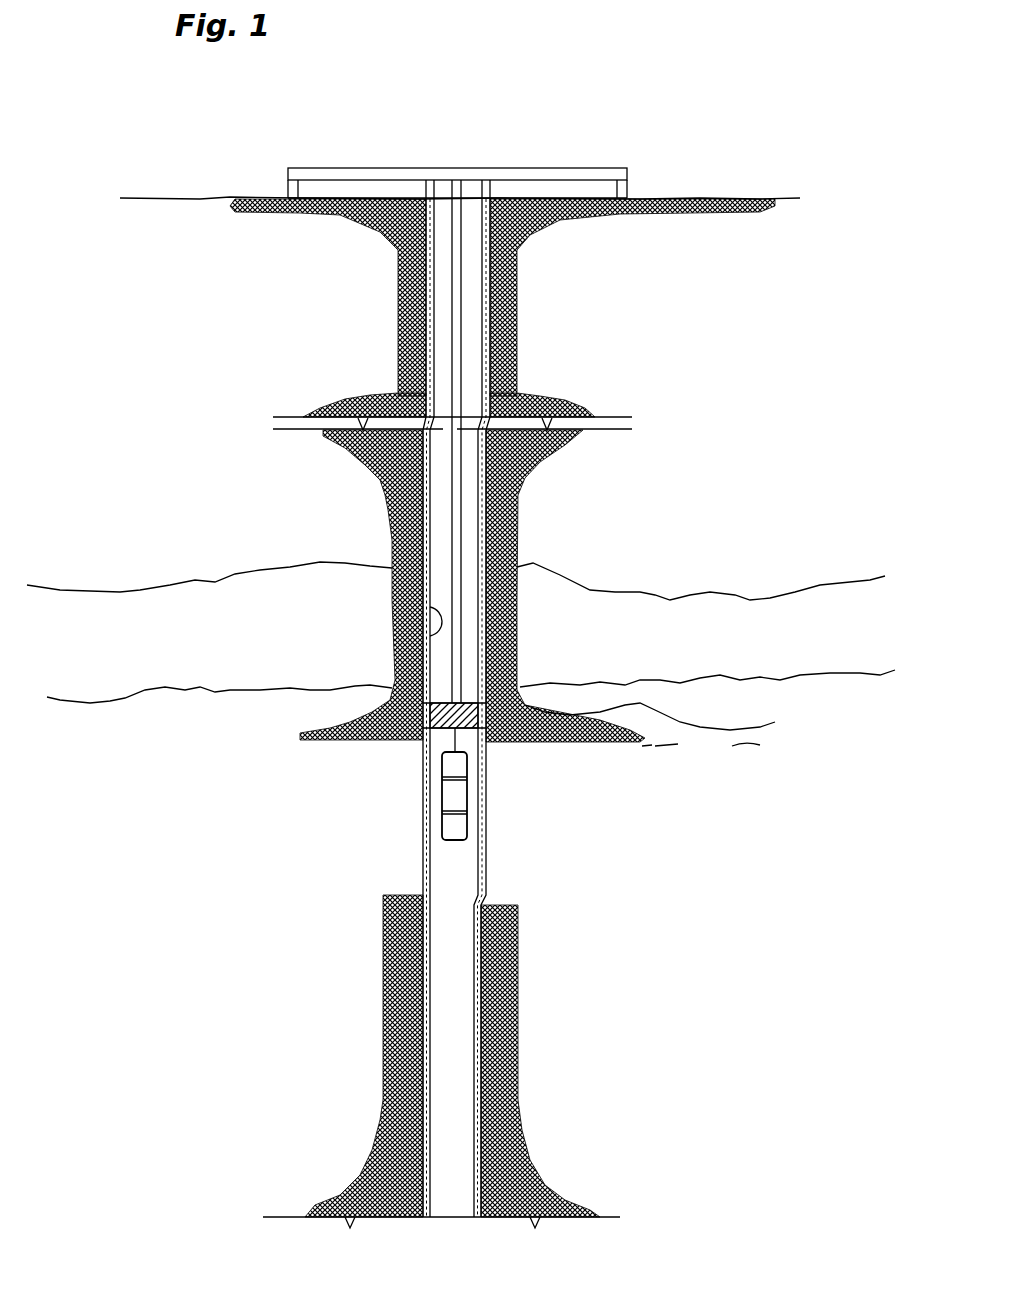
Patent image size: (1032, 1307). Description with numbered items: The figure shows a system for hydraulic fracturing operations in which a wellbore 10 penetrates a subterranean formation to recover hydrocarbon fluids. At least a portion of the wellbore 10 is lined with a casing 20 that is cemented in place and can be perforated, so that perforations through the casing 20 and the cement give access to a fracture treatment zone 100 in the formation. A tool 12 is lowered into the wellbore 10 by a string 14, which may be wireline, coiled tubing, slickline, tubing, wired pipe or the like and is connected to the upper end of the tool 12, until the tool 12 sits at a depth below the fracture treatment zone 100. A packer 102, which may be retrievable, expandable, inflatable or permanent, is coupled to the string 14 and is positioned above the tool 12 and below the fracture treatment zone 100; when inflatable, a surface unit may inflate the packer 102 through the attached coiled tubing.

The wellbore 10 is at (486, 315).
The tool 12 is at (455, 846).
The string 14 is at (462, 631).
The casing 20 is at (398, 613).
The fracture treatment zone 100 is at (146, 632).
The packer 102 is at (775, 722).